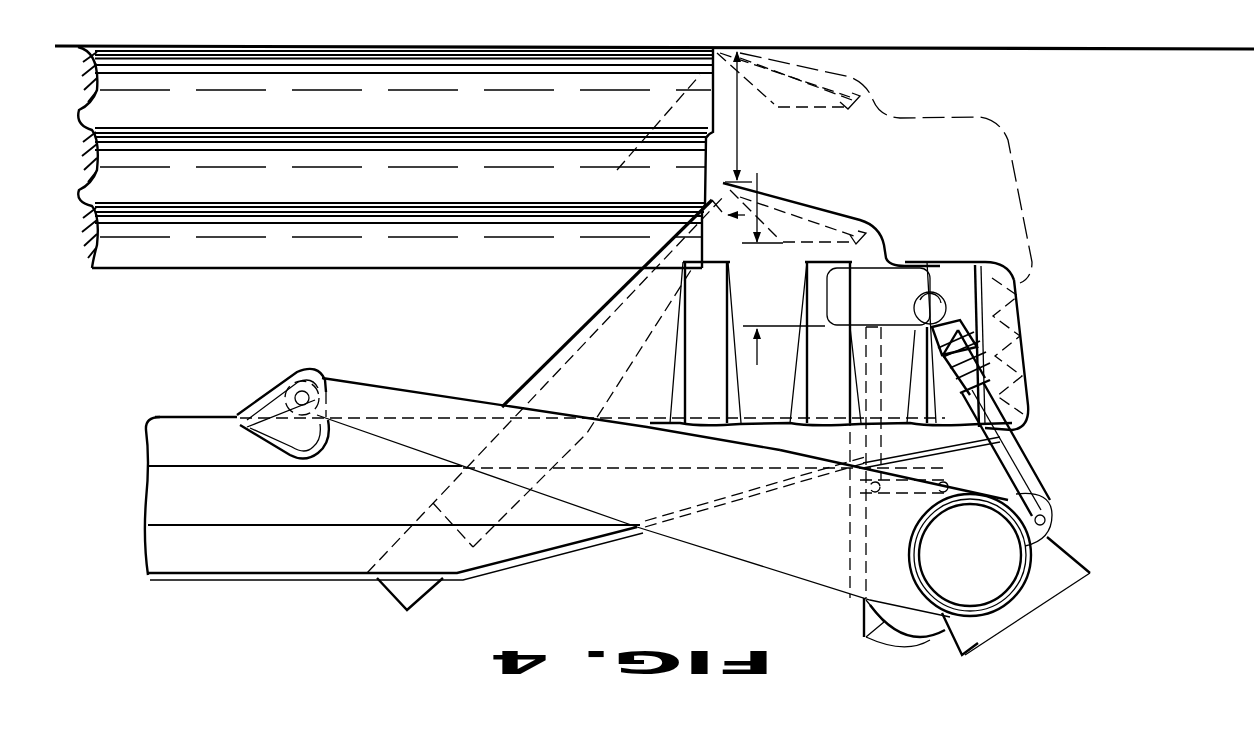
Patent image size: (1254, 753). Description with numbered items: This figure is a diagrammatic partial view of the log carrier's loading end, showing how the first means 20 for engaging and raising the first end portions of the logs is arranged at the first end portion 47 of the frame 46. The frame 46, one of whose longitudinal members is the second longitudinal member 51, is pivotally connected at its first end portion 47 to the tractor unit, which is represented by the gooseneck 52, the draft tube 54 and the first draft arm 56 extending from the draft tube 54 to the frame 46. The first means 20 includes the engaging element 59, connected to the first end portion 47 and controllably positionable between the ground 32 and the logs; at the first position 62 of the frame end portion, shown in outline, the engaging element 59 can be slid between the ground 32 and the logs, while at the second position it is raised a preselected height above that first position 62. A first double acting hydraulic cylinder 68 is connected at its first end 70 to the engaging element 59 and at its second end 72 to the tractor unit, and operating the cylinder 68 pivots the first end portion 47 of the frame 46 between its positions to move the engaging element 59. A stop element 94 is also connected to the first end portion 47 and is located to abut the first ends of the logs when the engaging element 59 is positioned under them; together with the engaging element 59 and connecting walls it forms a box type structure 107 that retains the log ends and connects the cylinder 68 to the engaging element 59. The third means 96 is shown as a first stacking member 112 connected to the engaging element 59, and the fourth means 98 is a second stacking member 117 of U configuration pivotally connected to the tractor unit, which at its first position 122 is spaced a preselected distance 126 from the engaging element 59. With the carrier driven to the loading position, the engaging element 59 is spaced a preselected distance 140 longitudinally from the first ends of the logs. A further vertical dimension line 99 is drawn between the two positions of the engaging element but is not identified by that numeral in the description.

The first means 20 is at (1066, 262).
The ground 32 is at (654, 134).
The frame 46 is at (273, 557).
The first end portion 47 is at (343, 608).
The second longitudinal member 51 is at (386, 482).
The gooseneck 52 is at (977, 633).
The draft tube 54 is at (986, 529).
The first draft arm 56 is at (808, 531).
The engaging element 59 is at (834, 212).
The first position 62 is at (690, 32).
The first double acting hydraulic cylinder 68 is at (1018, 457).
The first end 70 is at (988, 326).
The second end 72 is at (1045, 468).
The stop element 94 is at (1030, 352).
The third means 96 is at (601, 315).
The fourth means 98 is at (840, 484).
The lift height dimension 99 is at (745, 141).
The box type structure 107 is at (797, 281).
The first stacking member 112 is at (593, 363).
The second stacking member 117 is at (926, 474).
The first position 122 is at (757, 410).
The preselected distance 126 is at (764, 194).
The preselected distance 140 is at (705, 213).